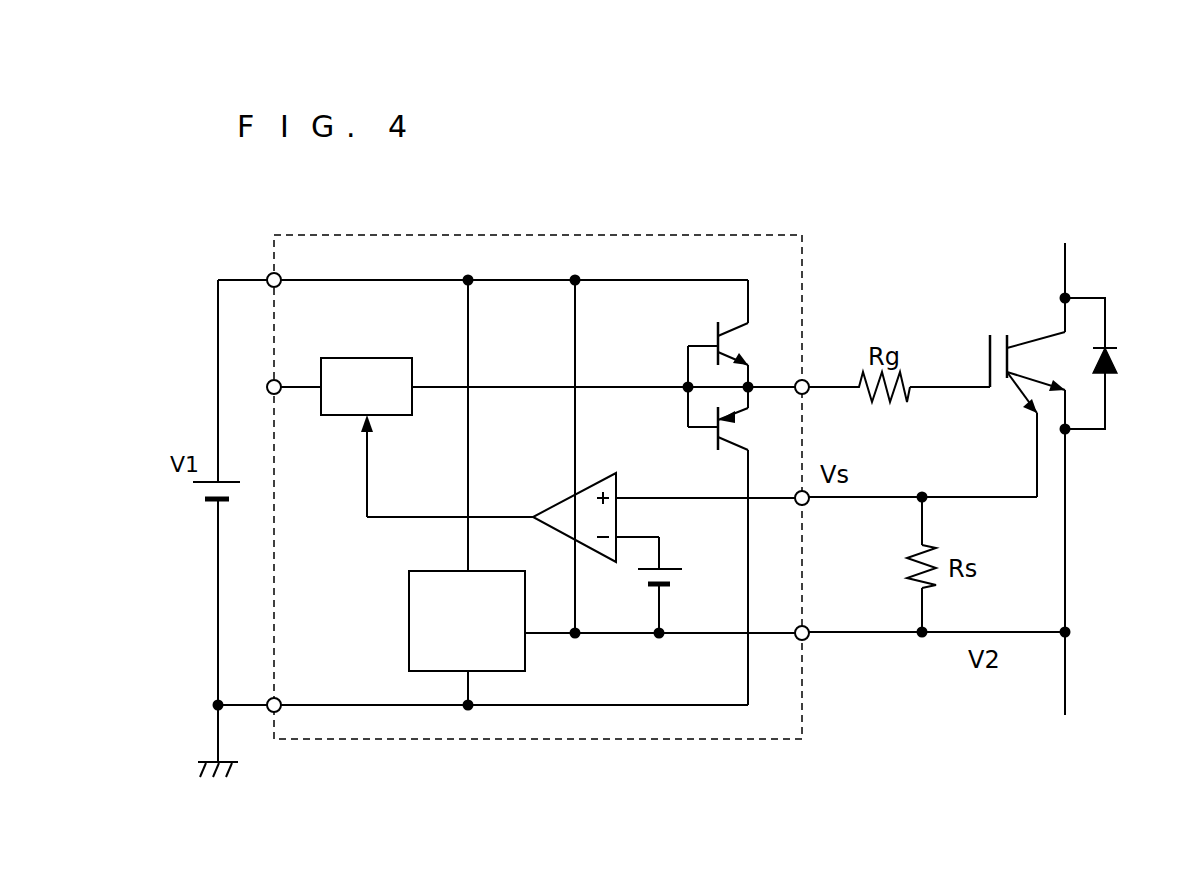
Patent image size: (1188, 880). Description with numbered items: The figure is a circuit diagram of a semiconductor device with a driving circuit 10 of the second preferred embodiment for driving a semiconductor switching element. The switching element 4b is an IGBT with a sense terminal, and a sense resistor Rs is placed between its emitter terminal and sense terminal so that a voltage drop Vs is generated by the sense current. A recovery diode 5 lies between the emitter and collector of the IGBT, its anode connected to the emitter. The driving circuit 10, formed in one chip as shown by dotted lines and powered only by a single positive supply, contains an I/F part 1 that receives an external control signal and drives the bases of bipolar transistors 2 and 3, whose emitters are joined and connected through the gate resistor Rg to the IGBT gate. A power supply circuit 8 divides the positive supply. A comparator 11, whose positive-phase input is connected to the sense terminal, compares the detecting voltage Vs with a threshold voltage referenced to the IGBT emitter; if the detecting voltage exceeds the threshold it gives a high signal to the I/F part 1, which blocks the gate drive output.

The I/F part 1 is at (337, 416).
The bipolar transistor 2 is at (722, 341).
The bipolar transistor 3 is at (722, 426).
The switching element 4b is at (1000, 330).
The recovery diode 5 is at (1120, 363).
The power supply circuit 8 is at (429, 570).
The driving circuit 10 is at (558, 740).
The comparator 11 is at (600, 470).